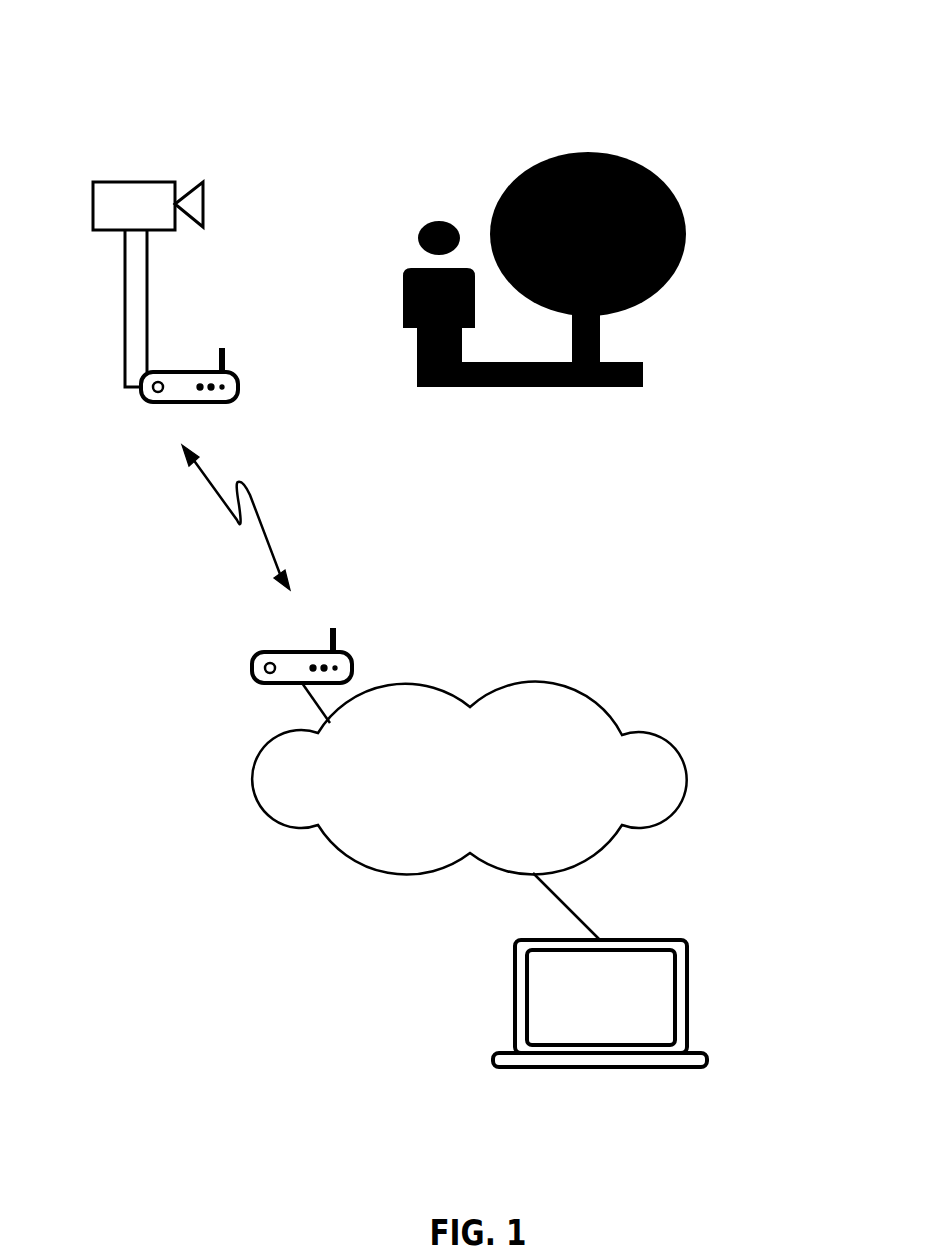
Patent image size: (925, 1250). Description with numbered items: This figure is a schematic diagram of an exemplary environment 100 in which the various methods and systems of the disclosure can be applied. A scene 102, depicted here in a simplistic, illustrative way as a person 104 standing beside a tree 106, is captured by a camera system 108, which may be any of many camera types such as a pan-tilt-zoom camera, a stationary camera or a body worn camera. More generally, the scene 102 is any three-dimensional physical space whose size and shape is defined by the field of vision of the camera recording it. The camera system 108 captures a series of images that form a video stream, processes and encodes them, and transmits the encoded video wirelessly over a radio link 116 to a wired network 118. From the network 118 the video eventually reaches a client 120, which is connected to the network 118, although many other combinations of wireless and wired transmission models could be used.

The environment 100 is at (25, 37).
The scene 102 is at (725, 140).
The person 104 is at (409, 272).
The tree 106 is at (672, 278).
The camera system 108 is at (133, 182).
The radio link 116 is at (121, 586).
The network 118 is at (538, 792).
The client 120 is at (705, 985).